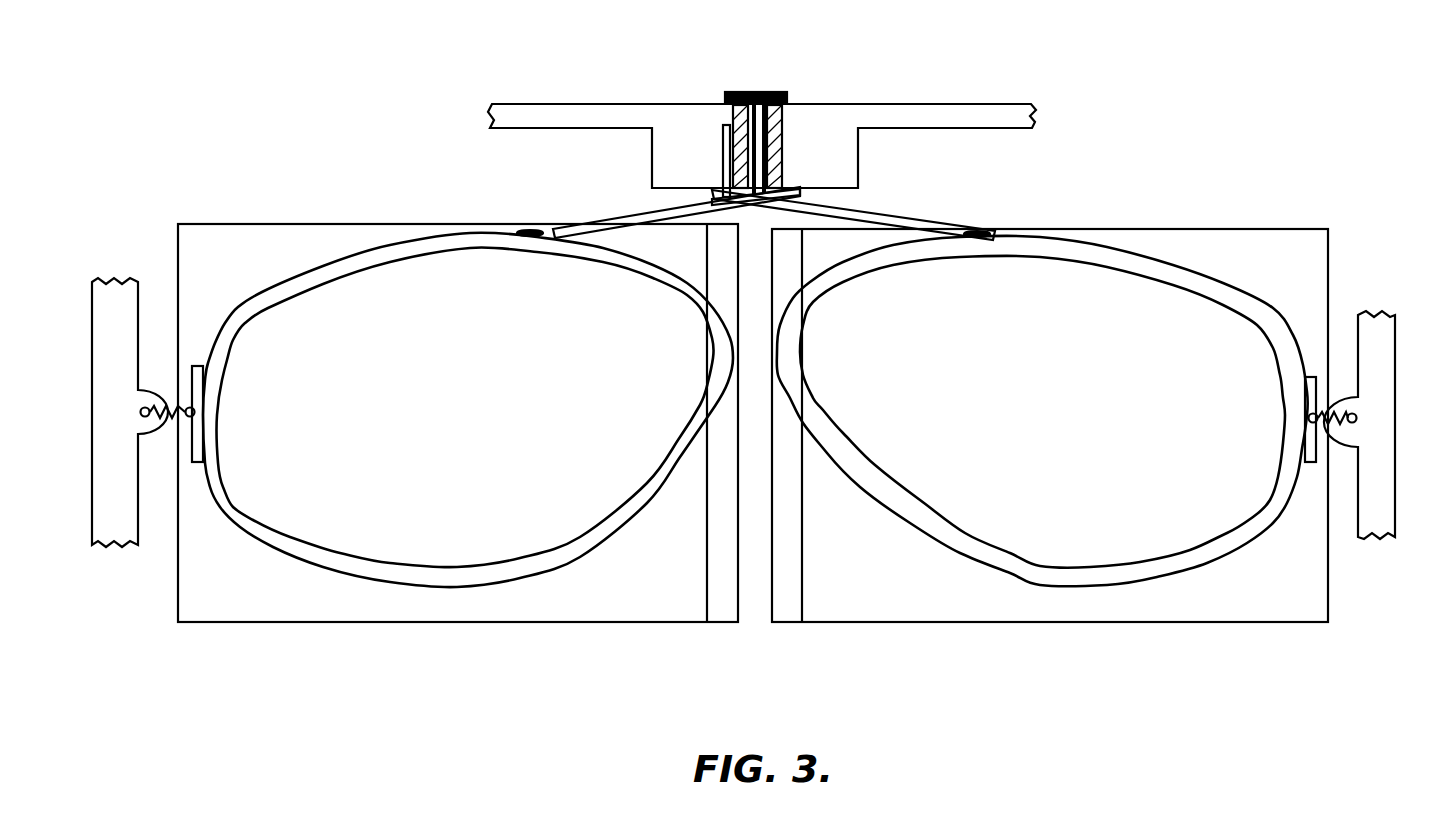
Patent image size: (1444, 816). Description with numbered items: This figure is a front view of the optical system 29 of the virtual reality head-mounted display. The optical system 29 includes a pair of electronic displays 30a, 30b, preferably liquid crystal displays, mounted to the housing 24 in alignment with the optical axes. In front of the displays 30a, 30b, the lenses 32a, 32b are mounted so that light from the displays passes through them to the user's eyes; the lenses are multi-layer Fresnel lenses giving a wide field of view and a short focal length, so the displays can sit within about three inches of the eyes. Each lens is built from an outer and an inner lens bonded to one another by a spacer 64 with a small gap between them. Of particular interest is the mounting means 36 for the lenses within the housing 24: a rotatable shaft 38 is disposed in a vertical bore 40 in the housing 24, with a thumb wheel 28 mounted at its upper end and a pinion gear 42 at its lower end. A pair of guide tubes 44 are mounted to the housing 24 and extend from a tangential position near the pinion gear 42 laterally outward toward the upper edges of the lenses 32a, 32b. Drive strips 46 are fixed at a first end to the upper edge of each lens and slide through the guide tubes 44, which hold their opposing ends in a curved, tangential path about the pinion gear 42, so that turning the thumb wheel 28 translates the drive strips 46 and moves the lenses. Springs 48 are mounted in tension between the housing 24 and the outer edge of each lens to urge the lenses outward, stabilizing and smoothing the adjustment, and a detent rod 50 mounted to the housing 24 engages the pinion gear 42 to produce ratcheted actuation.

The housing 24 is at (847, 104).
The thumb wheel 28 is at (773, 91).
The optical system 29 is at (370, 69).
The electronic display 30a is at (215, 605).
The electronic display 30b is at (1215, 608).
The lens 32a is at (580, 512).
The lens 32b is at (915, 505).
The mounting means 36 is at (749, 115).
The rotatable shaft 38 is at (780, 132).
The vertical bore 40 is at (780, 153).
The pinion gear 42 is at (742, 221).
The guide tubes 44 is at (643, 213).
The drive strips 46 is at (963, 233).
The springs 48 is at (150, 398).
The detent rod 50 is at (720, 137).
The spacer 64 is at (437, 570).